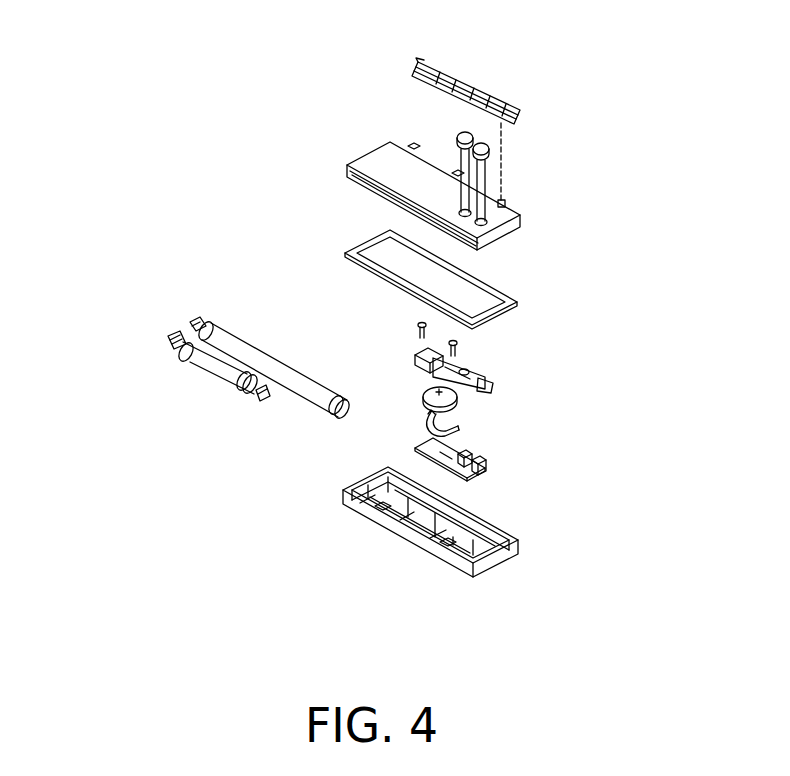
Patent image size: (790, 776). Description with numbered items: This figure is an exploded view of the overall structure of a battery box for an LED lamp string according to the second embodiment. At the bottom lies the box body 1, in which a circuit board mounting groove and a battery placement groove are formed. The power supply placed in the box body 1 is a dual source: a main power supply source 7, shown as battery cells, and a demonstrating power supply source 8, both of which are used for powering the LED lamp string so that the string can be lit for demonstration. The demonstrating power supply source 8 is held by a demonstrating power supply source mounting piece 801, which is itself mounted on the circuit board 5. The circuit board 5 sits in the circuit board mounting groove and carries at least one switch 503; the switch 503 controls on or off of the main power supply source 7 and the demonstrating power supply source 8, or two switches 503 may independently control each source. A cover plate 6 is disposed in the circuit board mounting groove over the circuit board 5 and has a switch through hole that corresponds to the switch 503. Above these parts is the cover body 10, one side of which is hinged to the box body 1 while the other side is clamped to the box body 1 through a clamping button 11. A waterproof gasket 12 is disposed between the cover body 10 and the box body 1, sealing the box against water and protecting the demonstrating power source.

The box body 1 is at (372, 518).
The circuit board 5 is at (420, 458).
The switch 503 is at (493, 468).
The cover plate 6 is at (492, 377).
The main power supply source 7 is at (210, 367).
The demonstrating power supply source 8 is at (425, 402).
The demonstrating power supply source mounting piece 801 is at (458, 432).
The cover body 10 is at (402, 172).
The clamping button 11 is at (502, 94).
The waterproof gasket 12 is at (517, 306).